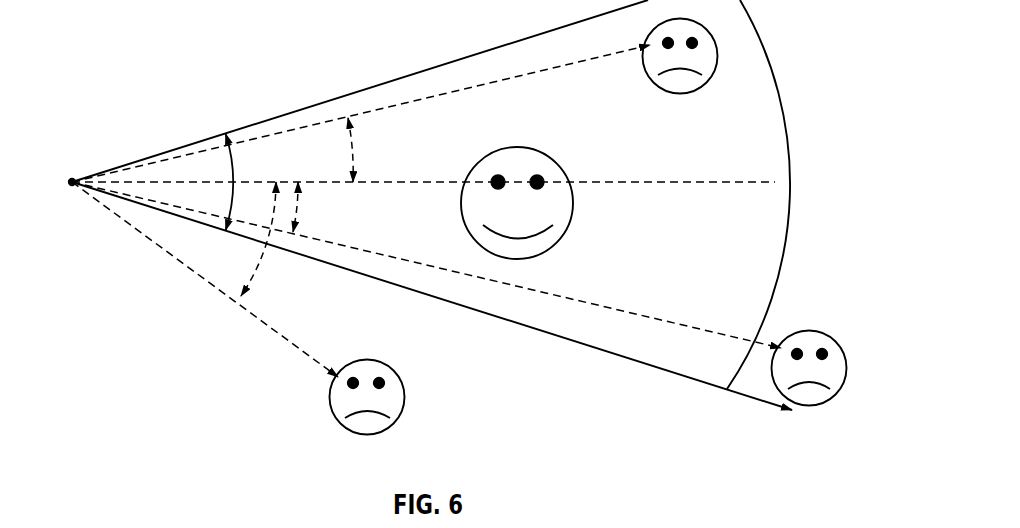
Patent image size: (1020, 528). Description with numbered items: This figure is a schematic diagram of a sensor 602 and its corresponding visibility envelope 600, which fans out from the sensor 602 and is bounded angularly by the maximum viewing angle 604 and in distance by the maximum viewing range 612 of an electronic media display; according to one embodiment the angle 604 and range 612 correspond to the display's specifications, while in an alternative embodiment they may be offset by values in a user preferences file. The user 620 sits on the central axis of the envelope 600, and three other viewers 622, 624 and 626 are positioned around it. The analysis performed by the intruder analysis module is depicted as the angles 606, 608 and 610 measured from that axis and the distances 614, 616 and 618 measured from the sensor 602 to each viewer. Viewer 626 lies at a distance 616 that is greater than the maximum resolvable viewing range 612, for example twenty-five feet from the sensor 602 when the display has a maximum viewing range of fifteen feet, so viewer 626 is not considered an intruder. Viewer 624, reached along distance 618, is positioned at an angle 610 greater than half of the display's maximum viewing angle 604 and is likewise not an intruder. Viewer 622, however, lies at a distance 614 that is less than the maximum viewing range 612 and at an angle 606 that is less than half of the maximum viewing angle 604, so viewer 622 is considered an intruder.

The visibility envelope 600 is at (437, 65).
The sensor 602 is at (71, 186).
The maximum viewing angle 604 is at (246, 148).
The angle 606 is at (351, 128).
The angle 608 is at (299, 191).
The angle 610 is at (259, 262).
The maximum viewing range 612 is at (772, 182).
The distance 614 is at (463, 88).
The distance 616 is at (611, 311).
The distance 618 is at (278, 330).
The user 620 is at (575, 202).
The viewer 622 is at (680, 94).
The viewer 624 is at (405, 397).
The viewer 626 is at (810, 331).